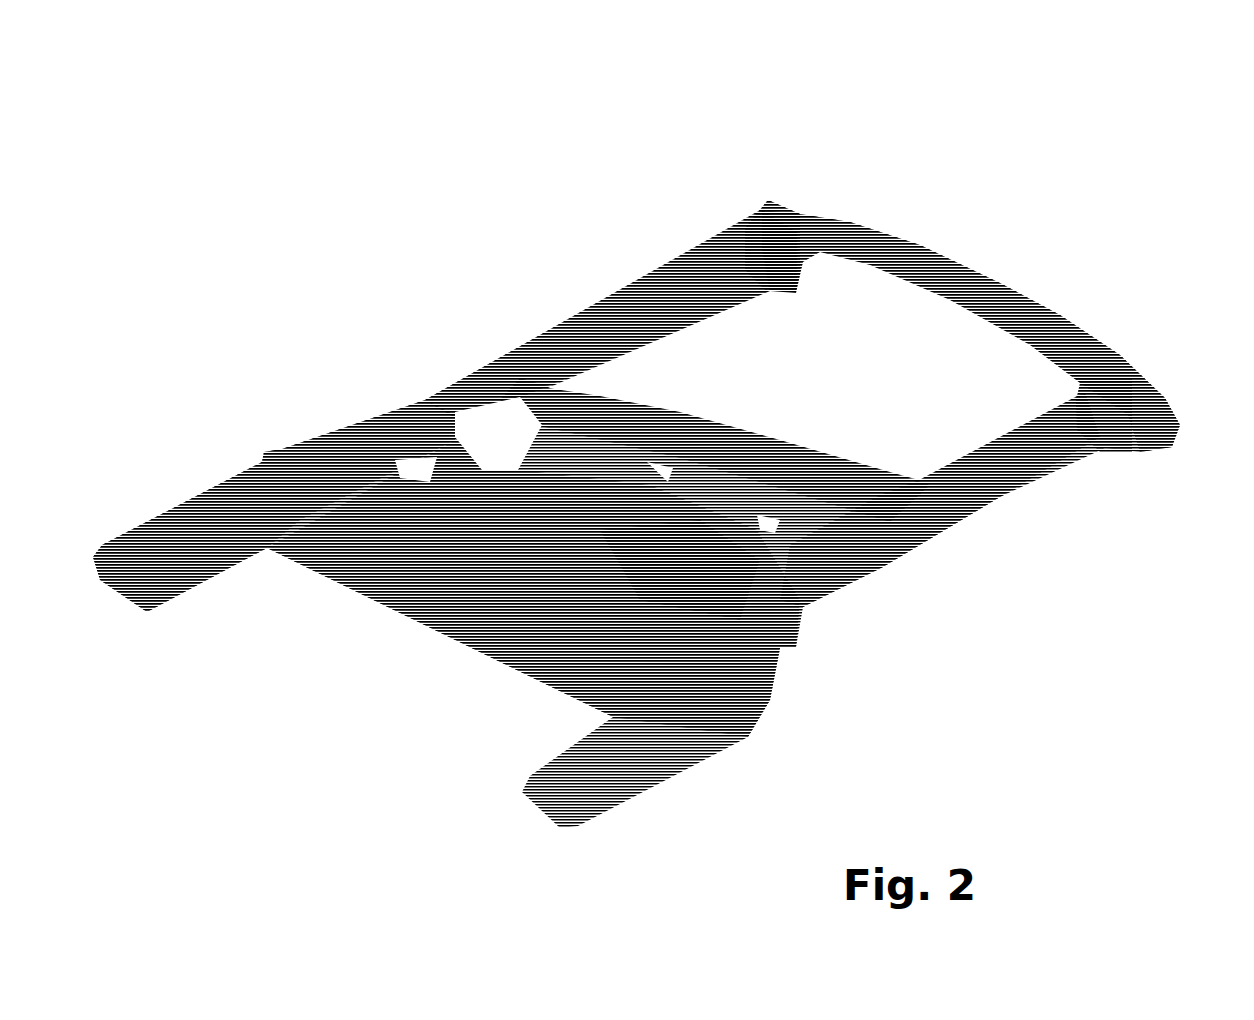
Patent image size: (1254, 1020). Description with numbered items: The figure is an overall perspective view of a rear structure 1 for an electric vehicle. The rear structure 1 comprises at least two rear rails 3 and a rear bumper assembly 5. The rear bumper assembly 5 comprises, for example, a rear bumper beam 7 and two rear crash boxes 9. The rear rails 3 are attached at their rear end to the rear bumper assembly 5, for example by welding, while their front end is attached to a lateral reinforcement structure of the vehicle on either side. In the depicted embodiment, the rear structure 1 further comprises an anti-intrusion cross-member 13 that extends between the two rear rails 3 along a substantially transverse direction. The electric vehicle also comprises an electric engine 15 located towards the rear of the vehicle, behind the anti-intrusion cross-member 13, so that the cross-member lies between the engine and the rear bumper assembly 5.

The rear structure 1 is at (452, 288).
The rear rails 3 is at (367, 410).
The rear bumper assembly 5 is at (890, 218).
The rear bumper beam 7 is at (987, 232).
The rear crash boxes 9 is at (797, 232).
The anti-intrusion cross-member 13 is at (432, 620).
The electric engine 15 is at (667, 573).